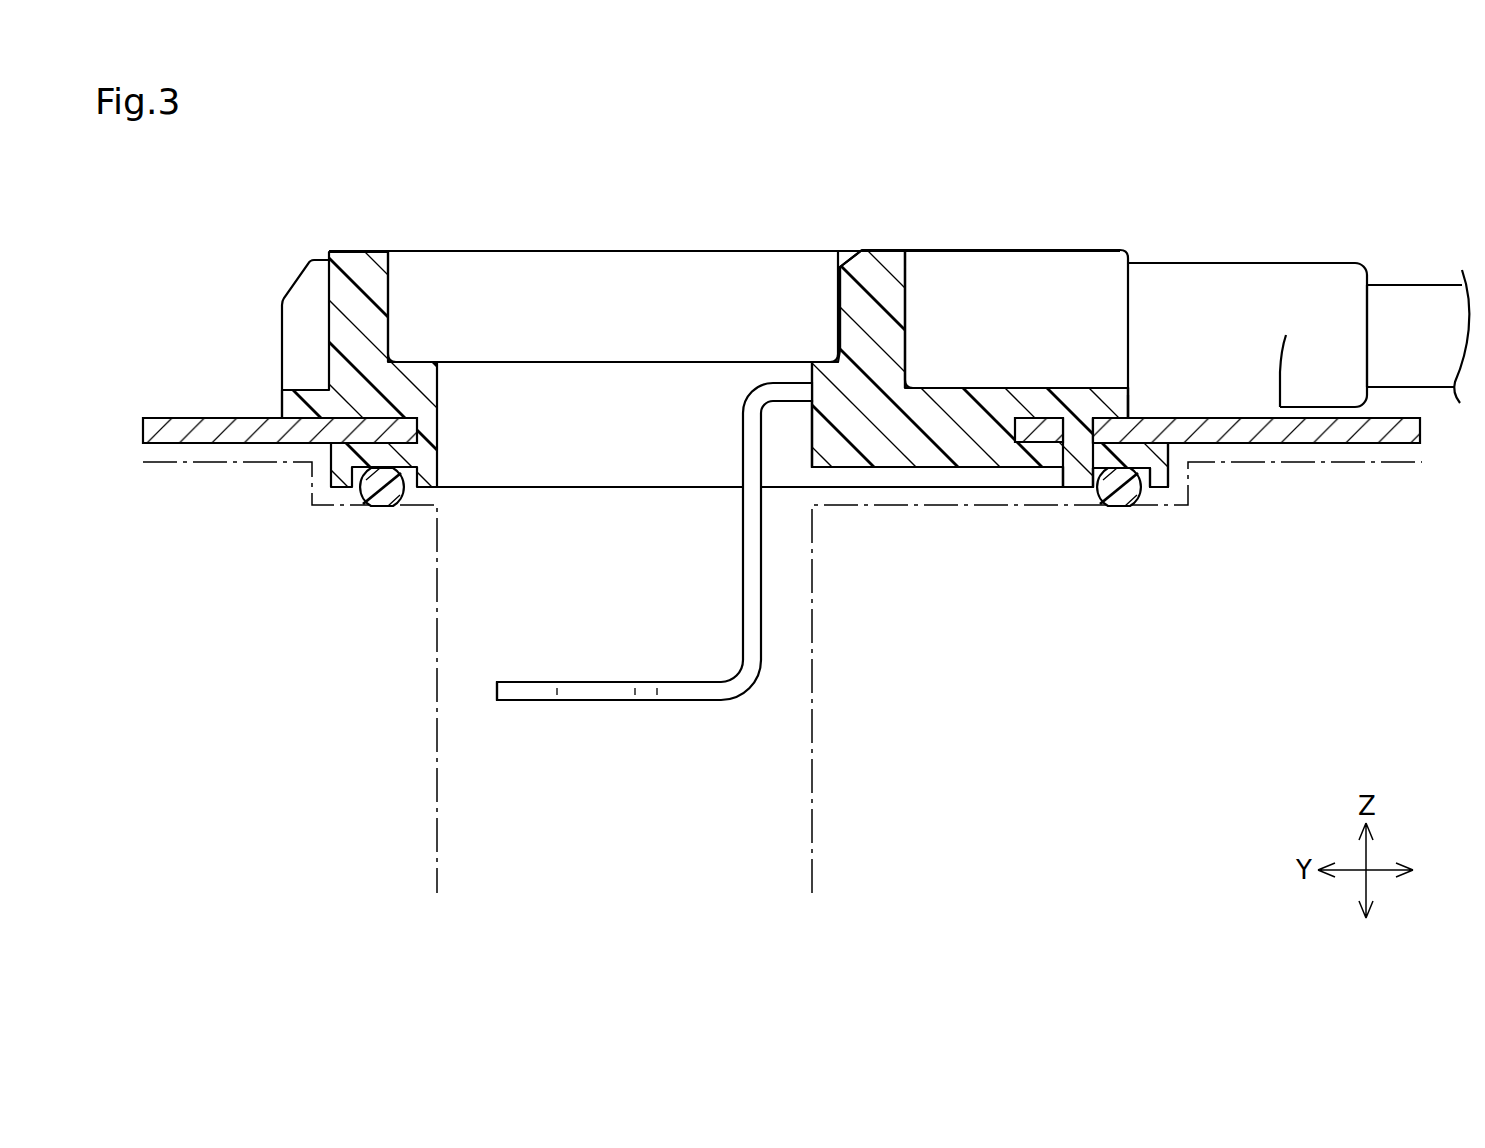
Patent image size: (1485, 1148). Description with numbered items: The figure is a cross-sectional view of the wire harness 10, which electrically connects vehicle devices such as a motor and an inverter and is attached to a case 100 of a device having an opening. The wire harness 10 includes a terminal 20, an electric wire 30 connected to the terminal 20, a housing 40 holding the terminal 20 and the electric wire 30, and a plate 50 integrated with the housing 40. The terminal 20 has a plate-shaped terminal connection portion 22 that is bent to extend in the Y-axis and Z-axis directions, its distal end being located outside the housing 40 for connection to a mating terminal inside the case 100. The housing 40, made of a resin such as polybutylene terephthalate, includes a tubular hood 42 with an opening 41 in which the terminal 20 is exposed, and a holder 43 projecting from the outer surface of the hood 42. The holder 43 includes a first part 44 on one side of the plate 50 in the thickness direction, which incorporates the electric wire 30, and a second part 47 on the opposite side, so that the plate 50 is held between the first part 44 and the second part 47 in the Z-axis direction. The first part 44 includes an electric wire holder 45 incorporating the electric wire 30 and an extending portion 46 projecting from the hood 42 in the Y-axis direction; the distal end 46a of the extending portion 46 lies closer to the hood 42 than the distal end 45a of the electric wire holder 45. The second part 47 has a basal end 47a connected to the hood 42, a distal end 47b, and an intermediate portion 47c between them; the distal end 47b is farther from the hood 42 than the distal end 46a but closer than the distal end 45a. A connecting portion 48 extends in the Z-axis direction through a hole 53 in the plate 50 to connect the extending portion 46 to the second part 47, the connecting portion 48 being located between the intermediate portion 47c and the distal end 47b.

The wire harness 10 is at (1320, 164).
The terminal 20 is at (740, 430).
The terminal connection portion 22 is at (692, 695).
The electric wire 30 is at (1436, 285).
The housing 40 is at (352, 250).
The opening 41 is at (837, 288).
The hood 42 is at (872, 265).
The holder 43 is at (1170, 263).
The first part 44 is at (1108, 364).
The electric wire holder 45 is at (937, 262).
The distal end of electric wire holder 45a is at (1362, 304).
The extending portion 46 is at (943, 397).
The distal end of extending portion 46a is at (1118, 405).
The second part 47 is at (973, 457).
The basal end 47a is at (922, 457).
The distal end of second part 47b is at (1162, 453).
The intermediate portion 47c is at (1045, 455).
The connecting portion 48 is at (1078, 432).
The plate 50 is at (1407, 443).
The hole 53 is at (1088, 416).
The case 100 is at (1303, 450).